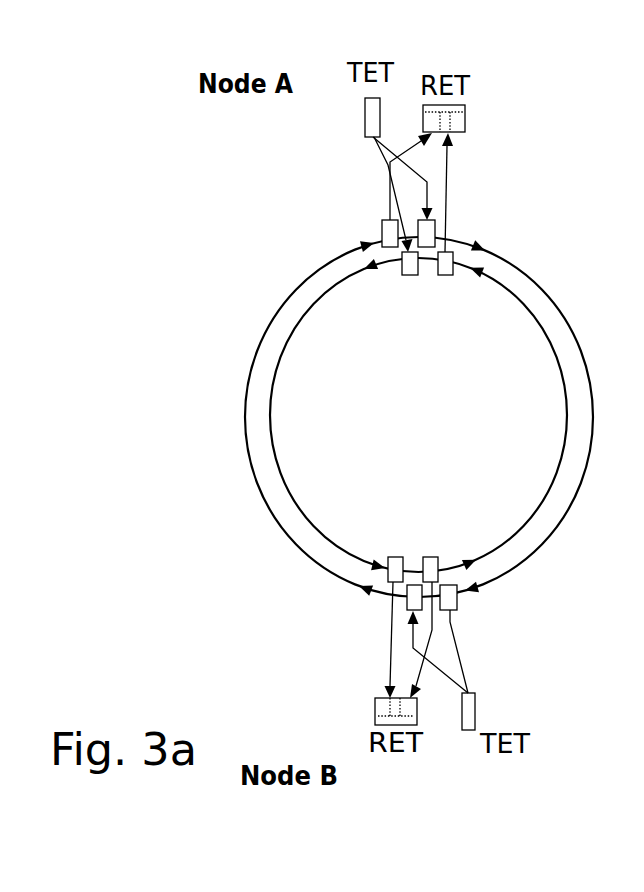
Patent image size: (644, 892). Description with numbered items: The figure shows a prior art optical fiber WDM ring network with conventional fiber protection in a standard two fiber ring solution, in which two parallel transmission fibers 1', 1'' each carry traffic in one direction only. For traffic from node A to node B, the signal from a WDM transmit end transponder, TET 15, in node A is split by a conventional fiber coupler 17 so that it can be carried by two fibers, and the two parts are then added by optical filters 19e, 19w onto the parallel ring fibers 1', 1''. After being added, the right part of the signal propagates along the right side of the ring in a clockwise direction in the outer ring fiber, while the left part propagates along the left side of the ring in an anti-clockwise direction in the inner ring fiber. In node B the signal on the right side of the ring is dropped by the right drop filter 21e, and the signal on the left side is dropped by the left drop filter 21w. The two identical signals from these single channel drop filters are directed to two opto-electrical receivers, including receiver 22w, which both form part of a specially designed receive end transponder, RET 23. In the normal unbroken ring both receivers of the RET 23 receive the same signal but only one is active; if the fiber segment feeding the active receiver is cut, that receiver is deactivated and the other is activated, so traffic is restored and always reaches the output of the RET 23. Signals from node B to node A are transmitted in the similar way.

The transmission fiber 1' is at (419, 413).
The transmission fiber 1'' is at (418, 415).
The transmit end transponder (TET) 15 is at (365, 115).
The fiber coupler 17 is at (389, 163).
The optical filter 19w is at (436, 228).
The optical filter 19e is at (410, 276).
The left drop filter 21w is at (397, 557).
The right drop filter 21e is at (458, 600).
The opto-electrical receiver 22w is at (375, 700).
The receive end transponder (RET) 23 is at (466, 111).